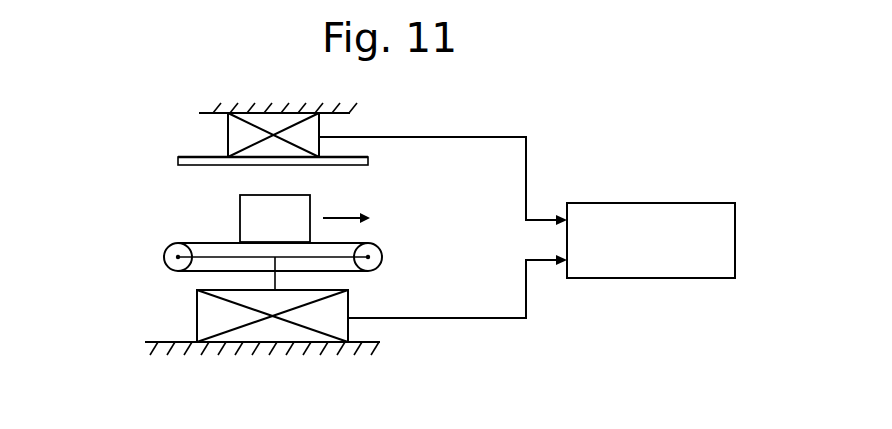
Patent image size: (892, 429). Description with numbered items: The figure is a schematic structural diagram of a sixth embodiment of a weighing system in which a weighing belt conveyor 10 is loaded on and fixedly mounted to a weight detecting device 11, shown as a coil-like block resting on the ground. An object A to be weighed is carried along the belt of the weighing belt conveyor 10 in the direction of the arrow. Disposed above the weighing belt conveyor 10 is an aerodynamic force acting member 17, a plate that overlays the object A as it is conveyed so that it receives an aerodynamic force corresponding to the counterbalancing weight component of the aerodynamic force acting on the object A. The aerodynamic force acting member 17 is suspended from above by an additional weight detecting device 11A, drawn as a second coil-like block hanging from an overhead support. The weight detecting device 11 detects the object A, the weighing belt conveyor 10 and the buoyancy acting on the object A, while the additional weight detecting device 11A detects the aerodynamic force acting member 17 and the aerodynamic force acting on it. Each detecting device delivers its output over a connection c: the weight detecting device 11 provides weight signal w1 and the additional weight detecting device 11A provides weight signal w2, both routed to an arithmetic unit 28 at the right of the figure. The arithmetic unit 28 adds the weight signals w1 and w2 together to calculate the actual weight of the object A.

The additional weight detecting device 11A is at (228, 133).
The aerodynamic force acting member 17 is at (178, 161).
The object to be weighed A is at (240, 213).
The weighing belt conveyor 10 is at (200, 243).
The weight detecting device 11 is at (197, 312).
The coil connection wires c is at (459, 137).
The weight signal w2 is at (527, 148).
The weight signal w1 is at (527, 305).
The arithmetic unit 28 is at (697, 203).